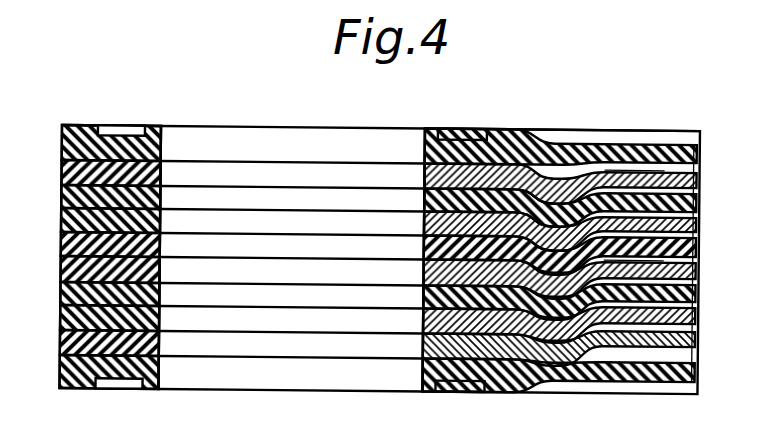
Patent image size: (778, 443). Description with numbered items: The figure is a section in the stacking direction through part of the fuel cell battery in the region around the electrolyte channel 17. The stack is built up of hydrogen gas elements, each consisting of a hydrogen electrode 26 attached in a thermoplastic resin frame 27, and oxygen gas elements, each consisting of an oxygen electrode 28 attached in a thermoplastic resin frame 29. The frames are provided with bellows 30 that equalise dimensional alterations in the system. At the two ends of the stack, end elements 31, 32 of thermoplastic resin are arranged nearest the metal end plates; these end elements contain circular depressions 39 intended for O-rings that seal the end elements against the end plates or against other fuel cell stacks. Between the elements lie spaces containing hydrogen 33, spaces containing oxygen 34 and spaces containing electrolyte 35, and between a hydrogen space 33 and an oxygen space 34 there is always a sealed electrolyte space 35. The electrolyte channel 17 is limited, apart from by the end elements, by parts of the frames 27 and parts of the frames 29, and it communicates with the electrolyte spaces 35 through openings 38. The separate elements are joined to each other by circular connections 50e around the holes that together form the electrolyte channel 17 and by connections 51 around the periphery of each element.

The electrolyte channel 17 is at (288, 126).
The hydrogen electrode 26 is at (662, 190).
The thermoplastic resin frame 27 is at (92, 198).
The oxygen electrode 28 is at (700, 178).
The thermoplastic resin frame 29 is at (158, 128).
The bellows 30 is at (580, 250).
The end element 31 is at (158, 370).
The end element 32 is at (80, 124).
The space containing hydrogen 33 is at (700, 212).
The space containing oxygen 34 is at (700, 155).
The space containing electrolyte 35 is at (492, 215).
The opening 38 is at (437, 150).
The circular depression 39 is at (120, 126).
The circular connection around the electrolyte channel 50e is at (162, 183).
The connection around the periphery 51 is at (62, 172).